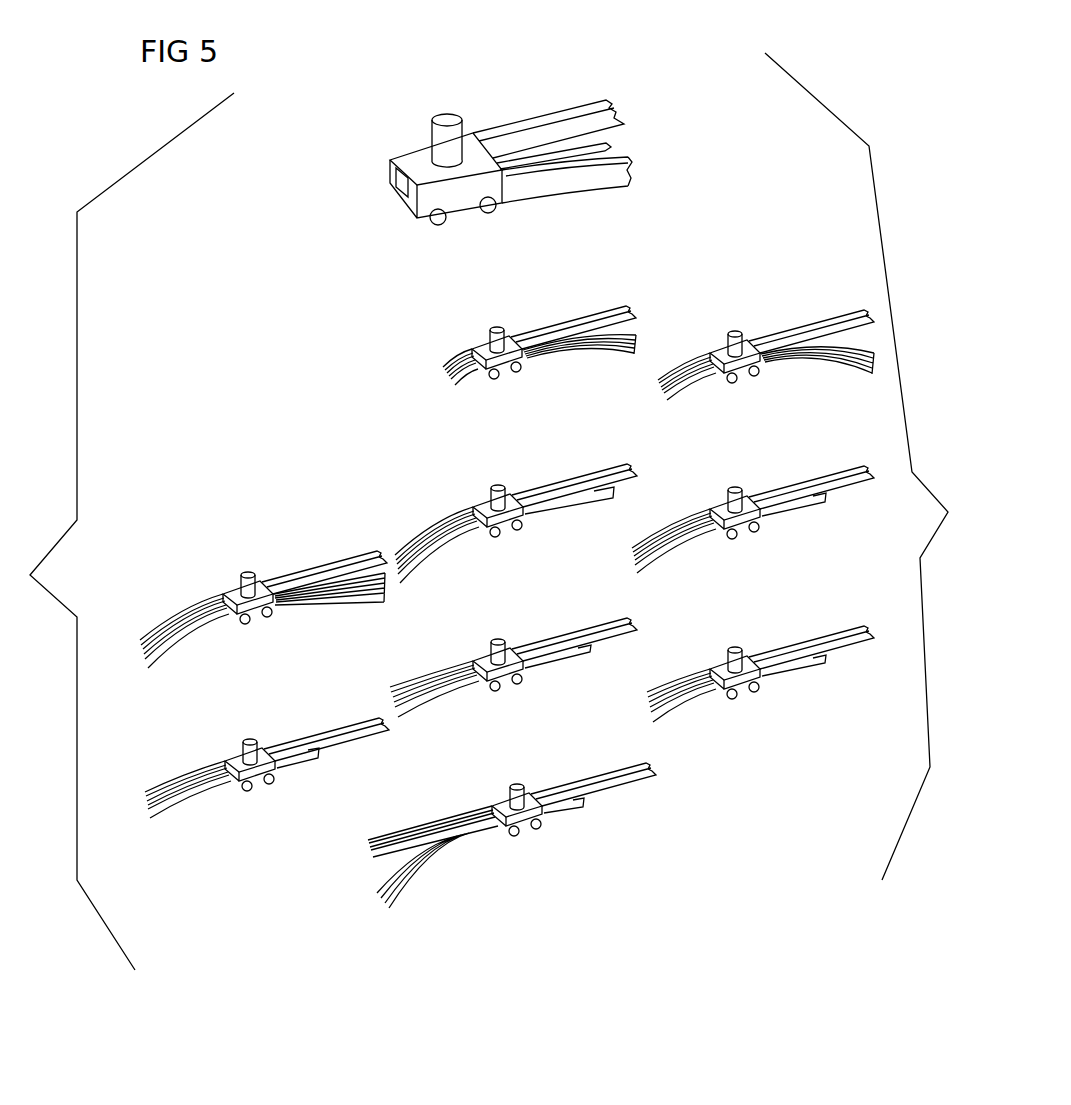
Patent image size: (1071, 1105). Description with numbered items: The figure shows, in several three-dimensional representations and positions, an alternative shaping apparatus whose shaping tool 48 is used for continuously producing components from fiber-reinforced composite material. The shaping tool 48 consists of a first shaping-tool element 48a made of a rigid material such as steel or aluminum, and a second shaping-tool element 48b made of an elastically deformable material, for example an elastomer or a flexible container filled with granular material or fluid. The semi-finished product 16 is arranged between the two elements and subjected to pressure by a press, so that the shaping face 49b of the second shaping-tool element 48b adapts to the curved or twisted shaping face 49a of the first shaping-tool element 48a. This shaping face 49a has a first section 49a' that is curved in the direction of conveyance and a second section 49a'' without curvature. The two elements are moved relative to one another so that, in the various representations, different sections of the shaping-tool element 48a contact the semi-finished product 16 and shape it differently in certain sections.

The shaping tool 48 is at (402, 126).
The first shaping-tool element 48a is at (553, 182).
The second shaping-tool element 48b is at (466, 141).
The semi-finished product 16 is at (616, 105).
The shaping face of the first shaping-tool element 49a is at (591, 152).
The first section of the shaping face 49a' is at (199, 636).
The second section of the shaping face 49a'' is at (329, 615).
The shaping face of the second shaping-tool element 49b is at (397, 199).